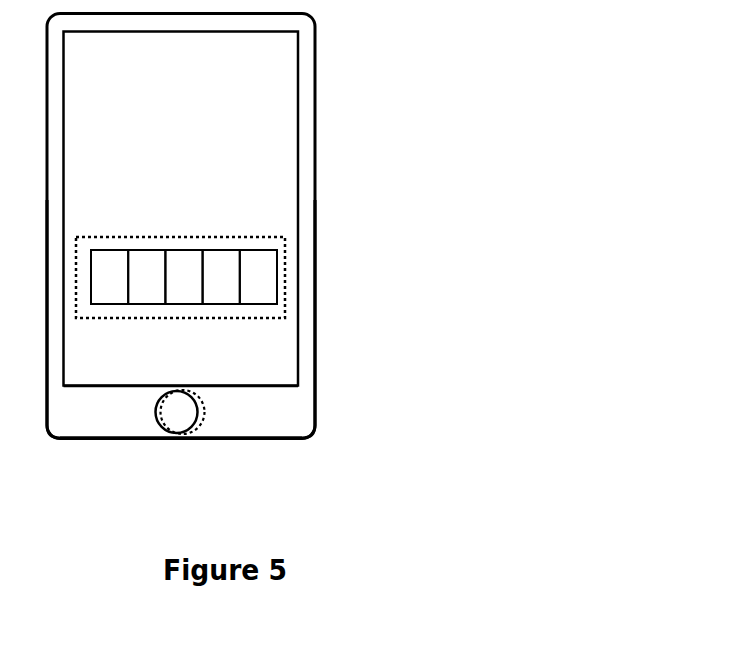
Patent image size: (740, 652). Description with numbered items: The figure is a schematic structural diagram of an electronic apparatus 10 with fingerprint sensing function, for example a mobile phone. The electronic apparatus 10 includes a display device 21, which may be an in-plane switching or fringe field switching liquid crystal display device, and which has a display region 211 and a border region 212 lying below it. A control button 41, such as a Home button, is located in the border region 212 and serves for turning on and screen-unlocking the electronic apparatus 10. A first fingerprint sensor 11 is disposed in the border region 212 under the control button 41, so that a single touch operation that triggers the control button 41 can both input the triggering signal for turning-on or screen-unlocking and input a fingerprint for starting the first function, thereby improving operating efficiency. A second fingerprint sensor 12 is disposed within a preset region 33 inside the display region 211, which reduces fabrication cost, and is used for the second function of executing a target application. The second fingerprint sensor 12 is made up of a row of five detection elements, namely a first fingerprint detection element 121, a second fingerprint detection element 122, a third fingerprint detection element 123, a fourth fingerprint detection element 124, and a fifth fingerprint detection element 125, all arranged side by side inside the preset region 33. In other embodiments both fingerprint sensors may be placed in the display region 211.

The electronic apparatus 10 is at (346, 161).
The display device 21 is at (258, 440).
The display region 211 is at (283, 352).
The border region 212 is at (283, 417).
The control button 41 is at (155, 412).
The first fingerprint sensor 11 is at (208, 410).
The preset region 33 is at (167, 318).
The second fingerprint sensor 12 is at (184, 208).
The first fingerprint detection element 121 is at (112, 265).
The second fingerprint detection element 122 is at (148, 272).
The third fingerprint detection element 123 is at (183, 265).
The fourth fingerprint detection element 124 is at (226, 265).
The fifth fingerprint detection element 125 is at (265, 245).